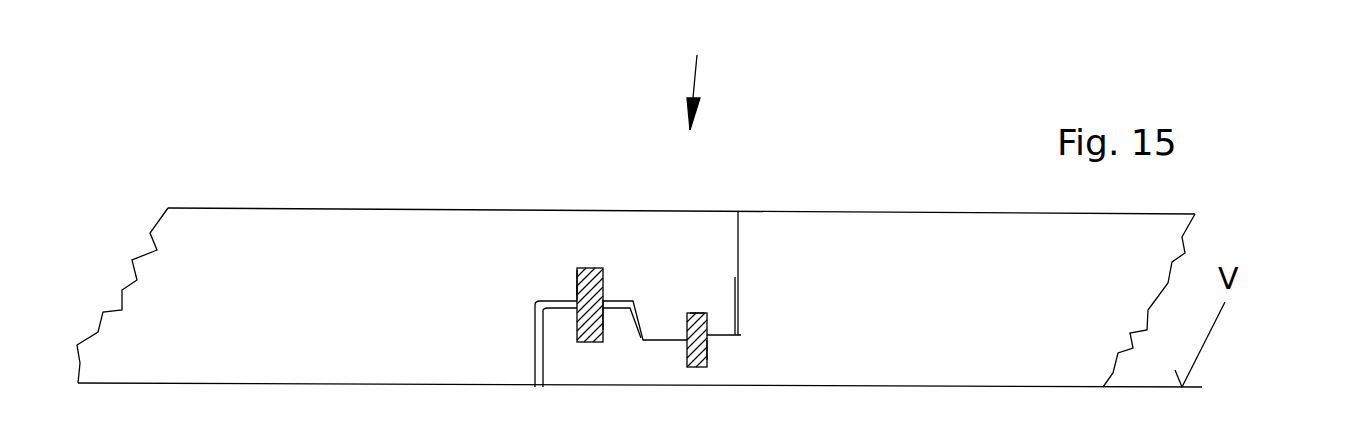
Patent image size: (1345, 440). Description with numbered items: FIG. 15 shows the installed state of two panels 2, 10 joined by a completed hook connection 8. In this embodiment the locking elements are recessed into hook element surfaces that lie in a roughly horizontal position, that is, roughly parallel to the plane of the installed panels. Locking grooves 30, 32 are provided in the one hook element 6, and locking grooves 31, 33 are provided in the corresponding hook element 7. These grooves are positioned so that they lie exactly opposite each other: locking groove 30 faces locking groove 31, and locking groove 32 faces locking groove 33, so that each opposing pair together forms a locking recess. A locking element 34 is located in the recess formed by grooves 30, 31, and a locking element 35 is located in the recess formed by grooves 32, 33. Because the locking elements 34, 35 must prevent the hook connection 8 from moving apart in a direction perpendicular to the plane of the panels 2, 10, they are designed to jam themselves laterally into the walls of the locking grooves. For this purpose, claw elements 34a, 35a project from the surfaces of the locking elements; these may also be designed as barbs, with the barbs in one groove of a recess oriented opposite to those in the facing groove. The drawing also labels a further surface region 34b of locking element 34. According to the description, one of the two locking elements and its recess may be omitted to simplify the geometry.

The panel 2 is at (278, 301).
The hook element 6 is at (675, 250).
The hook element 7 is at (645, 380).
The hook connection 8 is at (695, 74).
The panel 10 is at (1077, 305).
The locking groove 30 is at (575, 287).
The locking groove 31 is at (577, 321).
The locking groove 32 is at (707, 322).
The locking groove 33 is at (707, 348).
The locking element 34 is at (585, 268).
The claw element 34a is at (575, 280).
The second sealing surface 34b is at (603, 320).
The locking element 35 is at (700, 313).
The claw element 35a is at (702, 317).